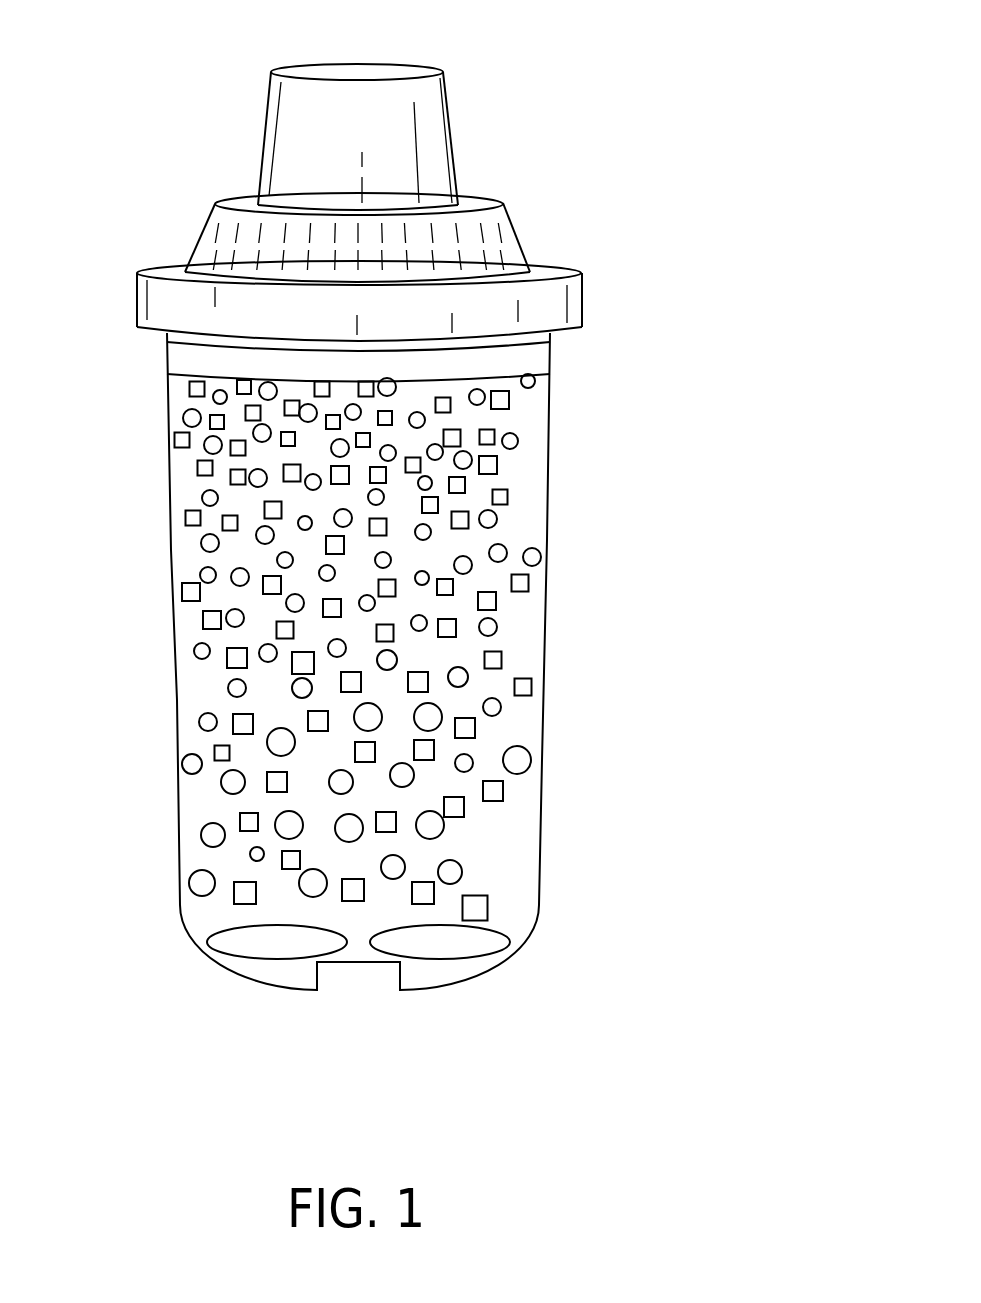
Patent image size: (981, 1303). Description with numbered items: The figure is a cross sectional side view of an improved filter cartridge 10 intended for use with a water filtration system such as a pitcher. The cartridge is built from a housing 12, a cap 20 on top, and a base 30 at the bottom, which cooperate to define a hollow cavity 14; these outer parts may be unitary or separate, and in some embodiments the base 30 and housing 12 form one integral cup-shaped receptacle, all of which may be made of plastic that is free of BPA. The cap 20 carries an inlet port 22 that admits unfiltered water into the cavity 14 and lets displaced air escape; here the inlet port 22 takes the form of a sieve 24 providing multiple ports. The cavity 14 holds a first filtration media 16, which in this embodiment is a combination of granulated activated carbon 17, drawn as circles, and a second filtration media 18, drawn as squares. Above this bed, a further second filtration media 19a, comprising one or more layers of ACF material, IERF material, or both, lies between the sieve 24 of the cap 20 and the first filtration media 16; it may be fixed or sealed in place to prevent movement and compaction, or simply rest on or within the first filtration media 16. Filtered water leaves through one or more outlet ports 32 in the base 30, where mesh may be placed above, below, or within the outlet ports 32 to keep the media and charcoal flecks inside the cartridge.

The filter cartridge 10 is at (343, 715).
The housing 12 is at (541, 807).
The hollow cavity 14 is at (353, 647).
The first filtration media 16 is at (200, 498).
The granulated activated carbon 17 is at (492, 517).
The second filtration media 18 is at (237, 658).
The second filtration media 19a is at (283, 368).
The cap 20 is at (427, 117).
The inlet port 22 is at (353, 222).
The sieve 24 is at (483, 258).
The base 30 is at (268, 985).
The outlet port 32 is at (317, 938).